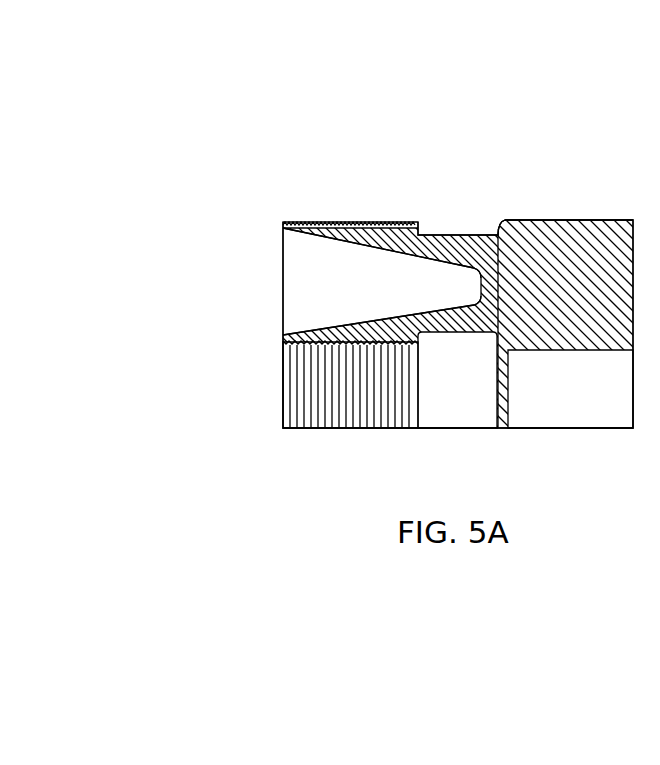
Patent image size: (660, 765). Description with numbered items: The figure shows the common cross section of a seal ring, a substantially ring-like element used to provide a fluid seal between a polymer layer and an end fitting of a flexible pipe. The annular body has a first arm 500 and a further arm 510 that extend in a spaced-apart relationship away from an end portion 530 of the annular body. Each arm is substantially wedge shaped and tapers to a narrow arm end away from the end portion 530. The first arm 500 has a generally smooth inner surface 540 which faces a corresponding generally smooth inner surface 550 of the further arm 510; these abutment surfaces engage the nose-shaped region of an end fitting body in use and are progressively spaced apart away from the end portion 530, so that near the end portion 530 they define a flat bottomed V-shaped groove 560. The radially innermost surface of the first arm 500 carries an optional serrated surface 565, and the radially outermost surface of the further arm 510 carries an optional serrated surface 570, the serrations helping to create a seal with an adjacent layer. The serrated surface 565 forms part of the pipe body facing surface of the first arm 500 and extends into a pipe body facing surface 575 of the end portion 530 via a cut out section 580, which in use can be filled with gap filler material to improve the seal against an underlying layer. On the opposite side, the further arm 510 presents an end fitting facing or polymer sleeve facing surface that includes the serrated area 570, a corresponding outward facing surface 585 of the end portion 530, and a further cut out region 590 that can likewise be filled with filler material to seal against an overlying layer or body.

The first arm 500 is at (236, 352).
The further arm 510 is at (260, 221).
The end portion 530 is at (545, 161).
The inner surface 540 is at (335, 334).
The inner surface 550 is at (335, 235).
The flat bottomed V-shaped groove 560 is at (347, 302).
The serrated surface 565 is at (326, 348).
The serrated surface 570 is at (335, 222).
The pipe body facing surface 575 is at (560, 352).
The cut out section 580 is at (455, 355).
The outward facing surface 585 is at (590, 220).
The cut out region 590 is at (449, 218).